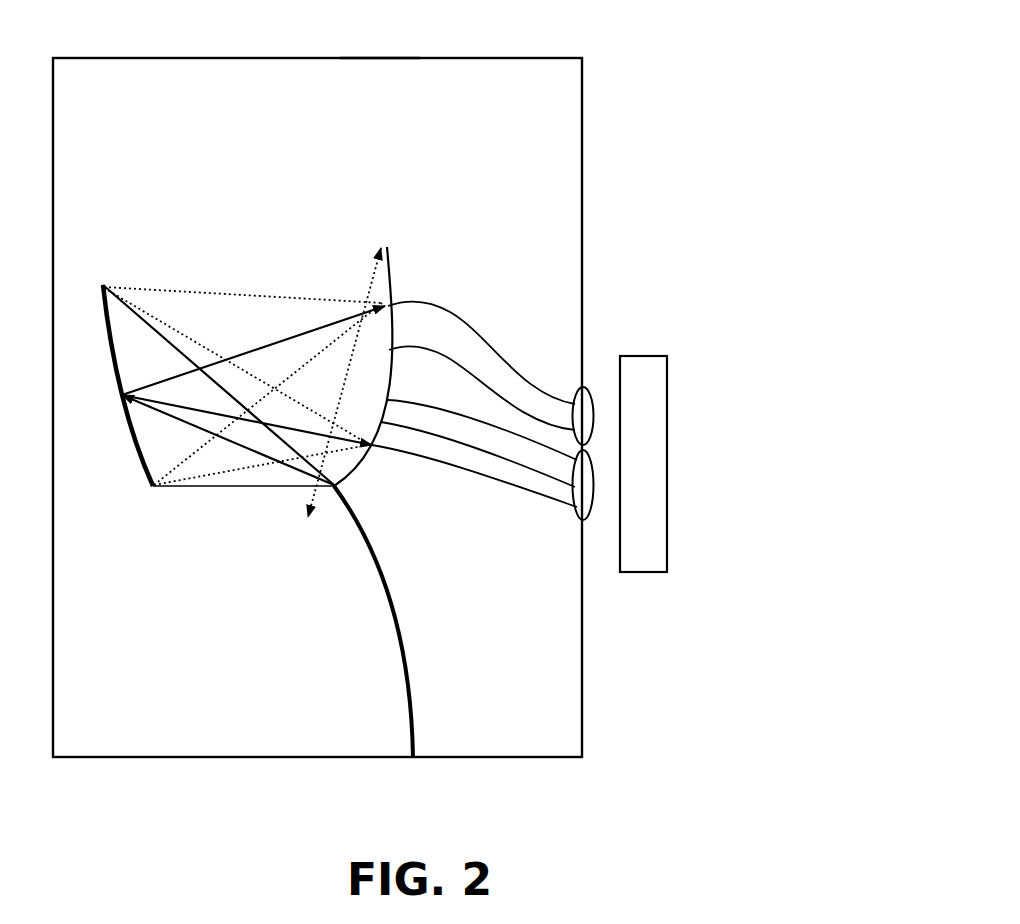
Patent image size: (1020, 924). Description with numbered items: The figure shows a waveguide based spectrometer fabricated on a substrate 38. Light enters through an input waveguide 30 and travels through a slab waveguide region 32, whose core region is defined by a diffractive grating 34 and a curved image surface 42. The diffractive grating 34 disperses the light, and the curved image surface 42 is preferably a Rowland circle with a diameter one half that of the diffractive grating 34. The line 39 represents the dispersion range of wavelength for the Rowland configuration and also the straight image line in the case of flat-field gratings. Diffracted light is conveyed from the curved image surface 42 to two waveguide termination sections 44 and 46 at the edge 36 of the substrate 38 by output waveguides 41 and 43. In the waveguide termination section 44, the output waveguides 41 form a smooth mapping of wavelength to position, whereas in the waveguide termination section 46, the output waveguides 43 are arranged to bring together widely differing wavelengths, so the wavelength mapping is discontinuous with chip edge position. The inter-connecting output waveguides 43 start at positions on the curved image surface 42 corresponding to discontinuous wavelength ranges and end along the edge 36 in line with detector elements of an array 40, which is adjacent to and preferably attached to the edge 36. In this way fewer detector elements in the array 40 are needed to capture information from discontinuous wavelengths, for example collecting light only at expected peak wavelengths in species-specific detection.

The input waveguide 30 is at (396, 616).
The slab waveguide region 32 is at (241, 503).
The diffractive grating 34 is at (130, 437).
The edge of the substrate 36 is at (584, 80).
The substrate 38 is at (357, 83).
The dispersion range line 39 is at (372, 278).
The array of detector elements 40 is at (731, 464).
The output waveguides 41 is at (488, 432).
The curved image surface 42 is at (387, 278).
The output waveguides 43 is at (483, 378).
The waveguide termination section 44 is at (590, 517).
The waveguide termination section 46 is at (589, 394).